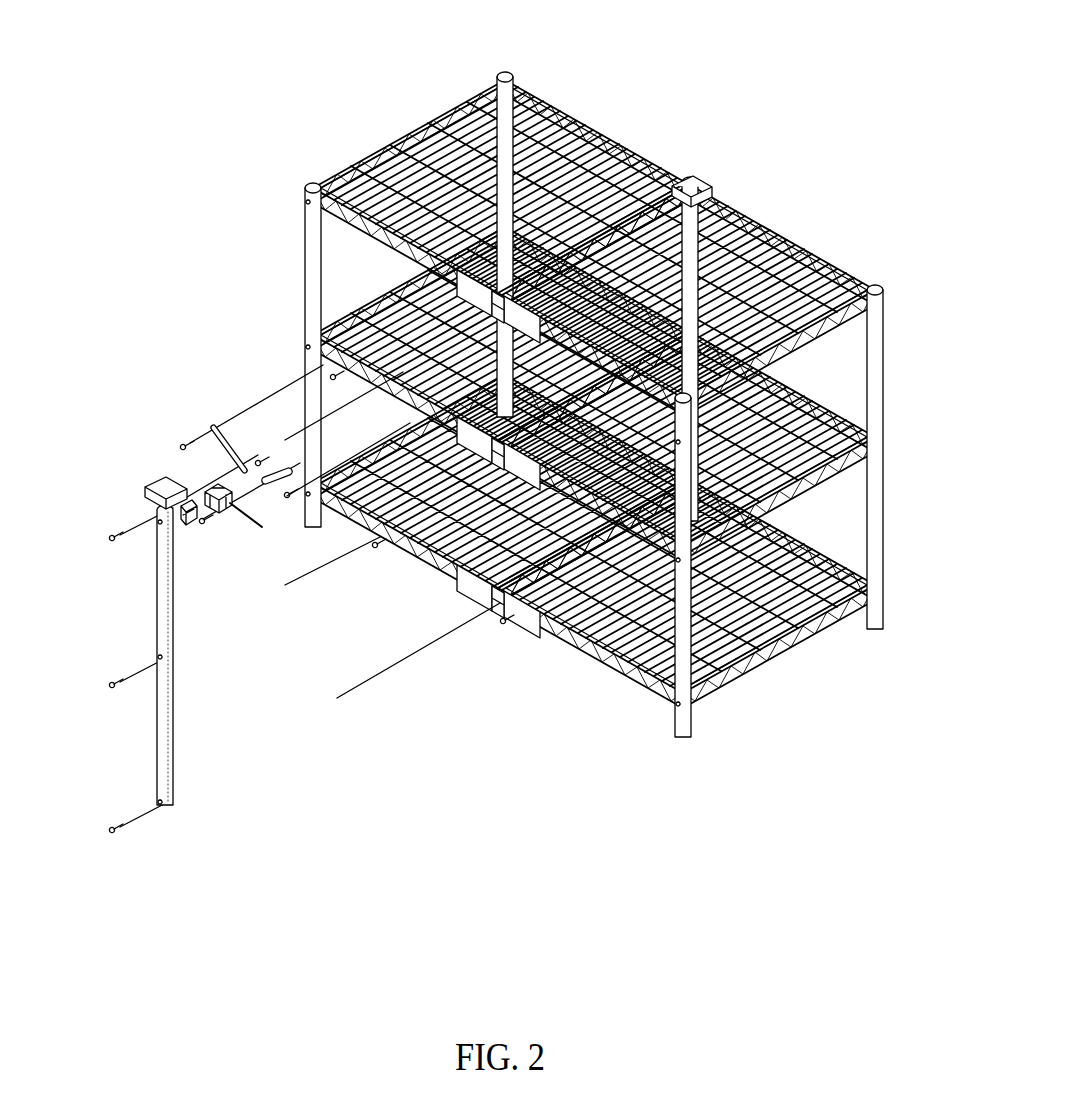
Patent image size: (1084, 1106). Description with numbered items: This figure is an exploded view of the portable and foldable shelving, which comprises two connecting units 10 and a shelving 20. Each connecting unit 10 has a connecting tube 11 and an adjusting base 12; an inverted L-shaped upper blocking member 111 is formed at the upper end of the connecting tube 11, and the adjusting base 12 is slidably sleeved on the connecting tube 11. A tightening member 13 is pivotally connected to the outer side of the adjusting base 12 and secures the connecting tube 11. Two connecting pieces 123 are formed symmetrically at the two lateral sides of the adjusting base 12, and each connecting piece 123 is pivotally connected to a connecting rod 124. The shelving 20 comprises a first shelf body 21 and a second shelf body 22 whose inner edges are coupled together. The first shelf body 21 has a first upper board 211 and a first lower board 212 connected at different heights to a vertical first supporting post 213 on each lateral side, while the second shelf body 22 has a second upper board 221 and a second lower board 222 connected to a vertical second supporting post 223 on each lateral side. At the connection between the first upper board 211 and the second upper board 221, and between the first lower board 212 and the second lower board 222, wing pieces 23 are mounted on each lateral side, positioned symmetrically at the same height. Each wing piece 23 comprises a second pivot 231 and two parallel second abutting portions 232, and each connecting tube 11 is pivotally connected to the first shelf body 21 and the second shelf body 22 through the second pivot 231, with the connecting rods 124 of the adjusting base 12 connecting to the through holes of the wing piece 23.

The connecting unit 10 is at (198, 681).
The connecting tube 11 is at (165, 580).
The upper blocking member 111 is at (162, 487).
The adjusting base 12 is at (220, 515).
The connecting piece 123 is at (233, 506).
The connecting rod 124 is at (232, 450).
The tightening member 13 is at (189, 530).
The shelving 20 is at (677, 137).
The first shelf body 21 is at (845, 273).
The first upper board 211 is at (770, 250).
The first lower board 212 is at (588, 645).
The first supporting post 213 is at (688, 728).
The second shelf body 22 is at (550, 104).
The second upper board 221 is at (420, 140).
The second lower board 222 is at (360, 512).
The second supporting post 223 is at (303, 272).
The wing piece 23 is at (528, 606).
The second pivot 231 is at (500, 604).
The second abutting portion 232 is at (483, 584).